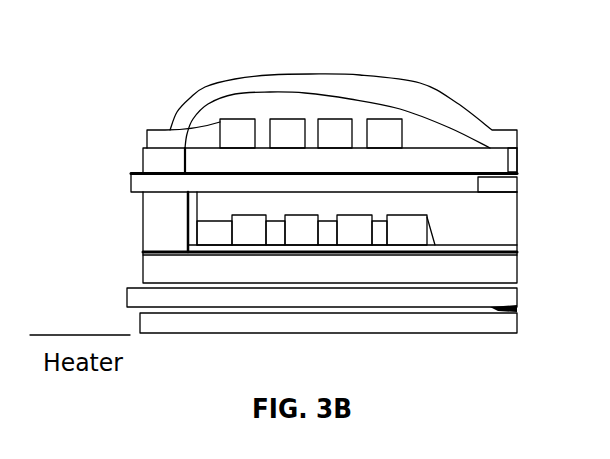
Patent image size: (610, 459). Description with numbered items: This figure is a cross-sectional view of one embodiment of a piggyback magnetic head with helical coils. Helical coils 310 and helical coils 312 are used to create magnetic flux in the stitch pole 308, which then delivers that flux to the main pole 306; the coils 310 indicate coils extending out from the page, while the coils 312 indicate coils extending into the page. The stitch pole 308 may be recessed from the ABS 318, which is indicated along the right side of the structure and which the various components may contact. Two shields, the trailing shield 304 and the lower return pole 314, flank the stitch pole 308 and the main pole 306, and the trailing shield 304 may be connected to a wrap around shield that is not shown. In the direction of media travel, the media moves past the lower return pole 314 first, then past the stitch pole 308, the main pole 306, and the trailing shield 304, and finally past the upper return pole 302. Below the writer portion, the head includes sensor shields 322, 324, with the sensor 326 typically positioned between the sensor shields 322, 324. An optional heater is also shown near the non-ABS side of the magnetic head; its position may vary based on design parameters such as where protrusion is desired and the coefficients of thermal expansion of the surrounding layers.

The upper return pole 302 is at (457, 103).
The trailing shield 304 is at (517, 158).
The main pole 306 is at (518, 185).
The stitch pole 308 is at (470, 192).
The helical coils 310 is at (165, 130).
The helical coils 312 is at (232, 215).
The lower return pole 314 is at (364, 276).
The ABS 318 is at (524, 257).
The sensor shield 322 is at (127, 297).
The sensor shield 324 is at (140, 323).
The sensor 326 is at (512, 304).